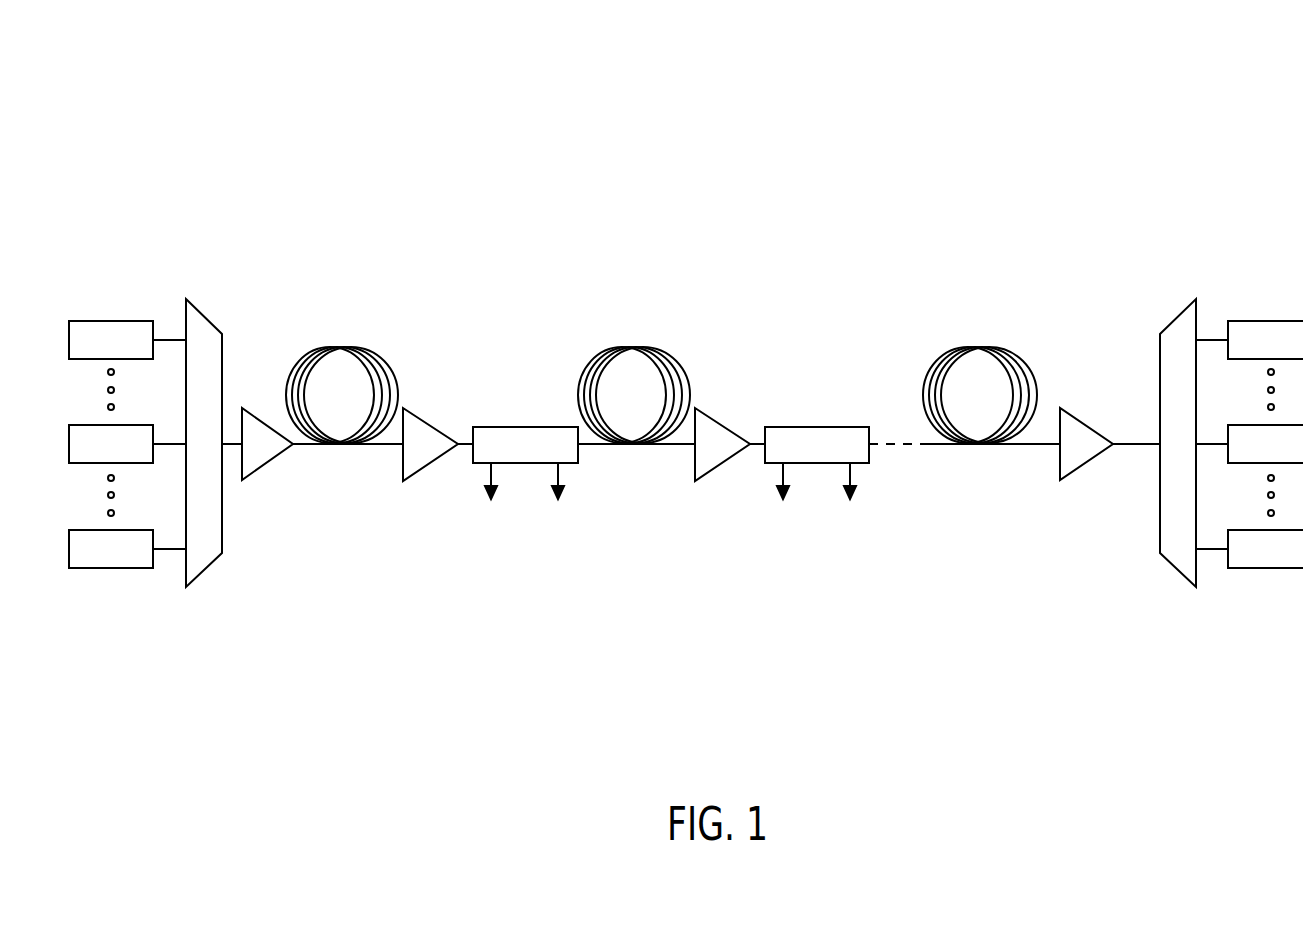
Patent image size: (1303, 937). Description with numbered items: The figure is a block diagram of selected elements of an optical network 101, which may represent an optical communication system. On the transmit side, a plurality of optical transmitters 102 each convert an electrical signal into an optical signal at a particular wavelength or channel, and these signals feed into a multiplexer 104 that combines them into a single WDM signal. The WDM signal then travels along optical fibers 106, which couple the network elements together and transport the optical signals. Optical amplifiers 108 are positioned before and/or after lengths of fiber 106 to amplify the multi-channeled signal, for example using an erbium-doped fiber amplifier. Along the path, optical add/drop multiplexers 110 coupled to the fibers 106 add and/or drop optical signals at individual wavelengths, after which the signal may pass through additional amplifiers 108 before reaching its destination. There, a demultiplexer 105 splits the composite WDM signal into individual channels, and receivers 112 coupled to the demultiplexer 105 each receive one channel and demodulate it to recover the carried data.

The optical network 101 is at (157, 68).
The transmitters 102 is at (104, 321).
The multiplexer 104 is at (208, 318).
The demultiplexer 105 is at (1180, 314).
The optical fibers 106 is at (336, 347).
The optical amplifiers 108 is at (267, 463).
The optical add/drop multiplexers 110 is at (512, 427).
The receivers 112 is at (1287, 321).